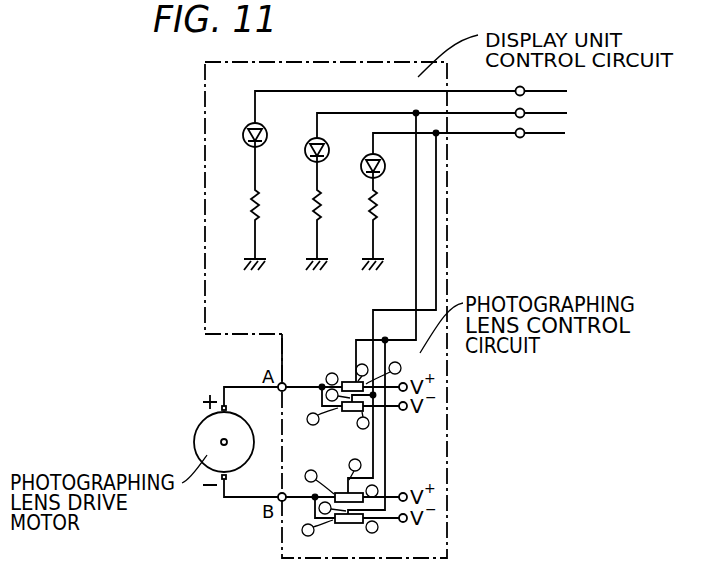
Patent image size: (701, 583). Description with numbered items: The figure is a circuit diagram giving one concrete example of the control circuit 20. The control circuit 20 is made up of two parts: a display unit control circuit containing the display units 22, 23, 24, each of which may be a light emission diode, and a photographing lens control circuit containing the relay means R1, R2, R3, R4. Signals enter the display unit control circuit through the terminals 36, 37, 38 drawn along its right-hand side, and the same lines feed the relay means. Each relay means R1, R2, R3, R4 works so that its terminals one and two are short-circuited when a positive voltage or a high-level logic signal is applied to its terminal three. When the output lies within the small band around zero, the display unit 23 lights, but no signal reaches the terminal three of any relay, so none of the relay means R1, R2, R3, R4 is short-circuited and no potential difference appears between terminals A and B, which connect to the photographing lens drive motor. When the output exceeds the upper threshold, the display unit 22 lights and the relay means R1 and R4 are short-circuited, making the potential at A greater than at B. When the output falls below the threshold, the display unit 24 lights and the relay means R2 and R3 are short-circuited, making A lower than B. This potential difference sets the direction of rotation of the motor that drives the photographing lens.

The control circuit 20 is at (205, 281).
The display unit 22 is at (326, 145).
The display unit 23 is at (265, 129).
The display unit 24 is at (382, 160).
The terminal 36 is at (524, 88).
The terminal 37 is at (524, 110).
The terminal 38 is at (524, 131).
The relay means R1 is at (346, 372).
The relay means R2 is at (357, 412).
The relay means R3 is at (346, 480).
The relay means R4 is at (354, 525).